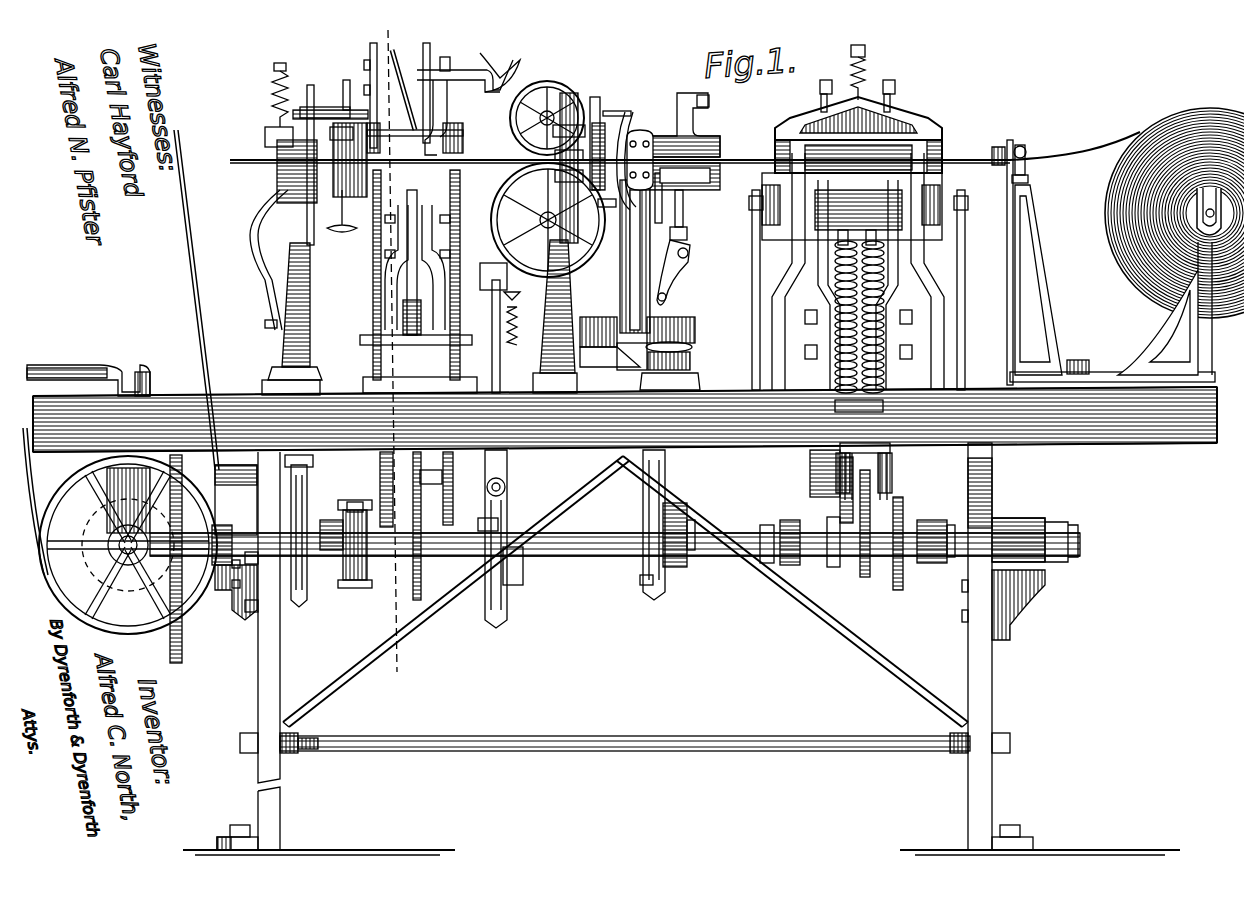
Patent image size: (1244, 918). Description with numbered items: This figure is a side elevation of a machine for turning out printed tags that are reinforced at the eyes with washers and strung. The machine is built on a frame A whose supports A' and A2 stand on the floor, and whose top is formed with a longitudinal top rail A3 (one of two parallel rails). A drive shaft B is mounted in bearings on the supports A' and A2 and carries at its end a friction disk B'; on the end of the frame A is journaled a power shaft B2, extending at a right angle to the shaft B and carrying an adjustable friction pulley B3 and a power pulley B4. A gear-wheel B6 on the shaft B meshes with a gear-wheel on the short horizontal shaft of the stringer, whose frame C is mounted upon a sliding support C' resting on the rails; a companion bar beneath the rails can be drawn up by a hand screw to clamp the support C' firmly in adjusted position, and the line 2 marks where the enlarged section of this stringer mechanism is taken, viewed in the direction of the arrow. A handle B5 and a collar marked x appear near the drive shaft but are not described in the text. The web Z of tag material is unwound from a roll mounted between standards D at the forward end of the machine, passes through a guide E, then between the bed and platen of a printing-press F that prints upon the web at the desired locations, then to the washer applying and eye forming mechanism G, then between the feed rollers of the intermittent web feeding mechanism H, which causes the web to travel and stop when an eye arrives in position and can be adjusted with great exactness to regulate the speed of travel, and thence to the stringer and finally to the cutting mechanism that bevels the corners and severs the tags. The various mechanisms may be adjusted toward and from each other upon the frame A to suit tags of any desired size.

The frame A is at (681, 655).
The support A' is at (1020, 646).
The support A2 is at (258, 688).
The top rail A3 is at (168, 403).
The drive shaft B is at (615, 556).
The friction disk B' is at (223, 558).
The power shaft B2 is at (108, 552).
The adjustable friction pulley B3 is at (98, 525).
The power pulley B4 is at (80, 488).
The shifting lever handle B5 is at (80, 368).
The gear-wheel B6 is at (352, 580).
The clutch collar x is at (350, 525).
The frame of the stringer mechanism C is at (436, 218).
The sliding support C' is at (311, 229).
The standards D is at (1162, 325).
The guide E is at (1040, 262).
The printing-press F is at (895, 100).
The washer applying and eye forming mechanism G is at (650, 238).
The web feeding mechanism H is at (551, 82).
The web of tag material Z is at (240, 162).
The line 2 is at (397, 650).